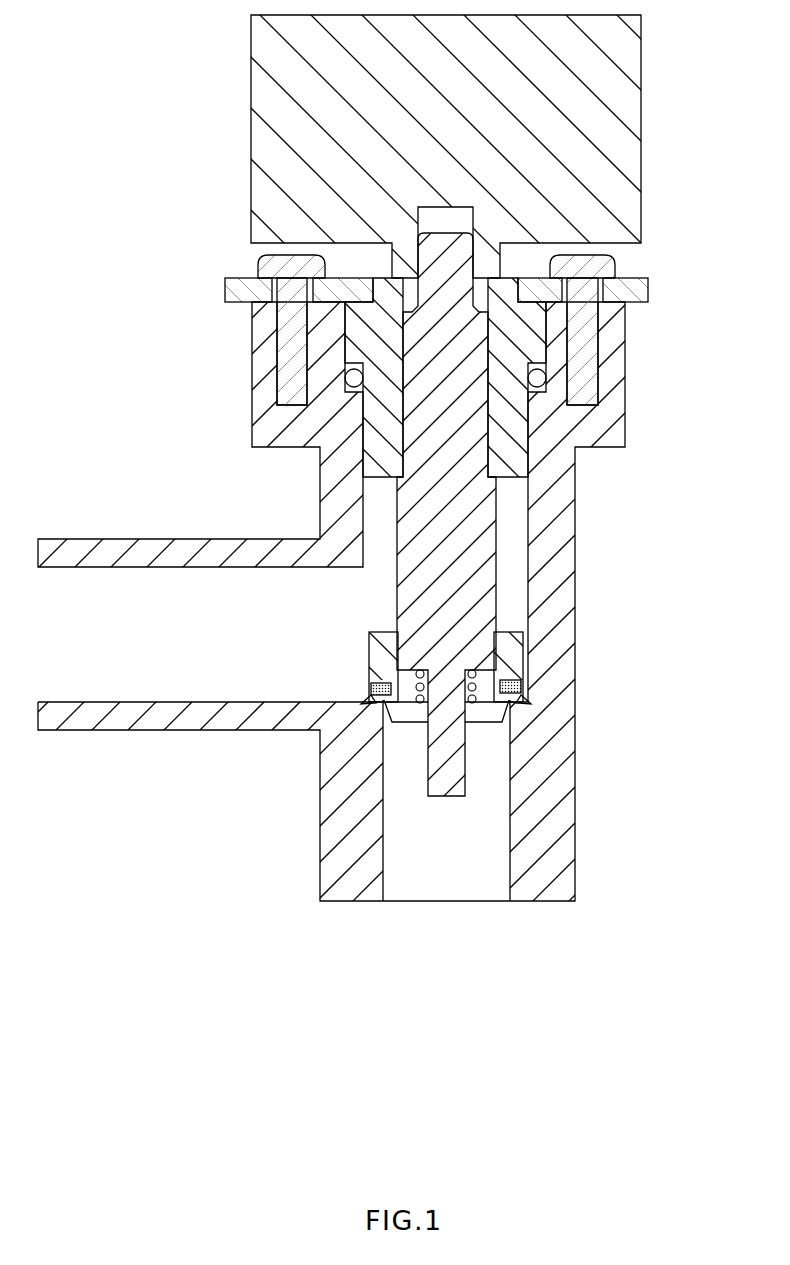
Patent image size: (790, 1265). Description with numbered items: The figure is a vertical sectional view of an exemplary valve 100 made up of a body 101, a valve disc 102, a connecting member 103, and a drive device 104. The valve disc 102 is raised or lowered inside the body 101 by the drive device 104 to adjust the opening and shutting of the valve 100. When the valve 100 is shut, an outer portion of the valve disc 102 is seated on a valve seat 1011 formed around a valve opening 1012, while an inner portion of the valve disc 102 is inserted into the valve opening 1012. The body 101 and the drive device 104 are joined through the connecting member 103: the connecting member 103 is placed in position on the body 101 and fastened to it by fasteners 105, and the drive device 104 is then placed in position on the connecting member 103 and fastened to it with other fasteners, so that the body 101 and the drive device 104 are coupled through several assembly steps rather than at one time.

The valve 100 is at (258, 957).
The body 101 is at (236, 757).
The valve disc 102 is at (510, 655).
The valve seat 1011 is at (511, 697).
The valve opening 1012 is at (509, 698).
The connecting member 103 is at (651, 290).
The drive device 104 is at (628, 152).
The fasteners 105 is at (606, 264).